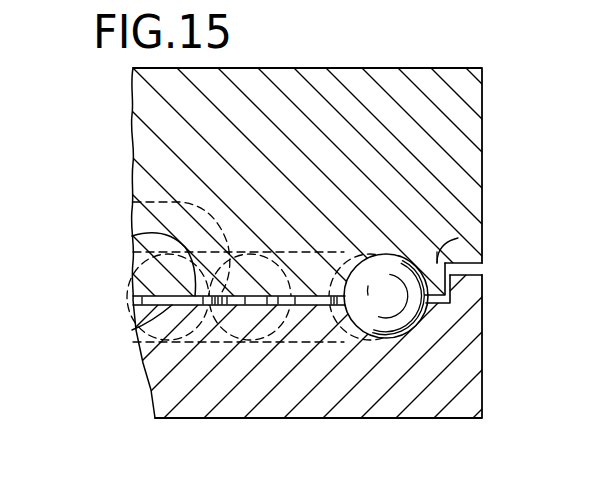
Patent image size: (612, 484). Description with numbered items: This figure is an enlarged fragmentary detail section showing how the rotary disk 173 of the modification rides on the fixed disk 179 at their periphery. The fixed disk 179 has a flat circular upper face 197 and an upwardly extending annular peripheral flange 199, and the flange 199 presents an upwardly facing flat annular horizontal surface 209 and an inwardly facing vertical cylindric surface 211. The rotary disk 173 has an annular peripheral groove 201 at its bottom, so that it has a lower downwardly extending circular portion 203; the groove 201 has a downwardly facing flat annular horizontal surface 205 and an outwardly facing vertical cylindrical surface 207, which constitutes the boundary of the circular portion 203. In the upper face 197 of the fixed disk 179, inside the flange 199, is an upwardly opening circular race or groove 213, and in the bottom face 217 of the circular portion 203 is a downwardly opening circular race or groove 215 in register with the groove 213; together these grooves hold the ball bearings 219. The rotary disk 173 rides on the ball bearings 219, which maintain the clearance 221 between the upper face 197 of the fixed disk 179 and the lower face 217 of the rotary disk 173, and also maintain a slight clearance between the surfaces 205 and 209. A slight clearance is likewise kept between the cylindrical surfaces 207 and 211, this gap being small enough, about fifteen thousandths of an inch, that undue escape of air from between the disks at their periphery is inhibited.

The rotary disk 173 is at (483, 98).
The fixed disk 179 is at (482, 418).
The flat circular upper face 197 is at (160, 318).
The annular peripheral flange 199 is at (465, 294).
The annular peripheral groove 201 is at (476, 250).
The lower downwardly extending circular portion 203 is at (132, 280).
The downwardly facing flat annular horizontal surface 205 is at (447, 258).
The outwardly facing vertical cylindrical surface 207 is at (437, 263).
The upwardly facing flat annular horizontal surface 209 is at (486, 268).
The inwardly facing vertical cylindric surface 211 is at (453, 288).
The upwardly opening circular race or groove 213 is at (397, 337).
The downwardly opening circular race or groove 215 is at (150, 203).
The bottom face 217 is at (157, 234).
The ball bearings 219 is at (369, 318).
The clearance 221 is at (132, 302).